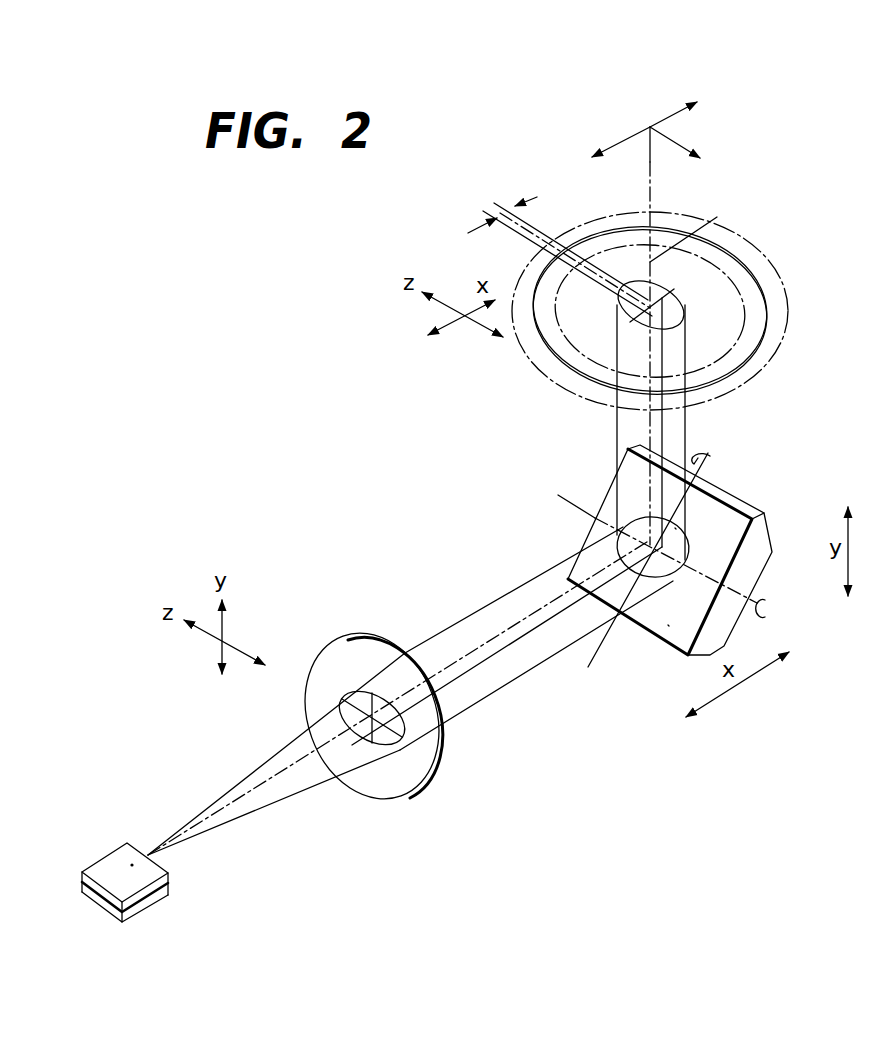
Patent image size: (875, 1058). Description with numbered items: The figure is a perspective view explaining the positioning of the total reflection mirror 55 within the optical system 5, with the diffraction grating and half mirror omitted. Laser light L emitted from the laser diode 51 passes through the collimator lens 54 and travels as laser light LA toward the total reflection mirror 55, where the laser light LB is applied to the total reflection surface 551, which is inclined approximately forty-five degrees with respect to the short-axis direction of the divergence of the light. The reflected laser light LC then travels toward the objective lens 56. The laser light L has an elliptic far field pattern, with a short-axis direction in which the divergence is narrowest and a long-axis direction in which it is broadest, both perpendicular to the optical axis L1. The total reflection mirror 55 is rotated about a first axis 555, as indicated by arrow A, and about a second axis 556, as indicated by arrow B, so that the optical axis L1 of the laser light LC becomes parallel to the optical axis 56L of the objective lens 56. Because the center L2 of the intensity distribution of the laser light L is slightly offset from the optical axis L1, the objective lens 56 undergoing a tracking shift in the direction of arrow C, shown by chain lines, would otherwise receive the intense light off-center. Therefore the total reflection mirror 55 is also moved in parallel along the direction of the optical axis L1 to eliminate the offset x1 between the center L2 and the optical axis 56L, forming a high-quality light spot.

The optical system 5 is at (388, 505).
The laser diode 51 is at (110, 882).
The collimator lens 54 is at (420, 777).
The total reflection mirror 55 is at (755, 548).
The total reflection surface 551 is at (668, 625).
The first axis 555 is at (588, 667).
The second axis 556 is at (570, 502).
The objective lens 56 is at (767, 247).
The optical axis of the objective lens 56L is at (717, 217).
The laser light L is at (480, 703).
The optical axis L1 is at (493, 647).
The center of the intensity distribution L2 is at (482, 618).
The laser light from the laser diode to the total reflection mirror LA is at (385, 763).
The laser light applied to the total reflection mirror LB is at (675, 528).
The laser light from the total reflection mirror to the objective lens LC is at (687, 303).
The arrow A is at (709, 459).
The arrow B is at (691, 568).
The arrow C is at (646, 323).
The offset x1 is at (560, 249).